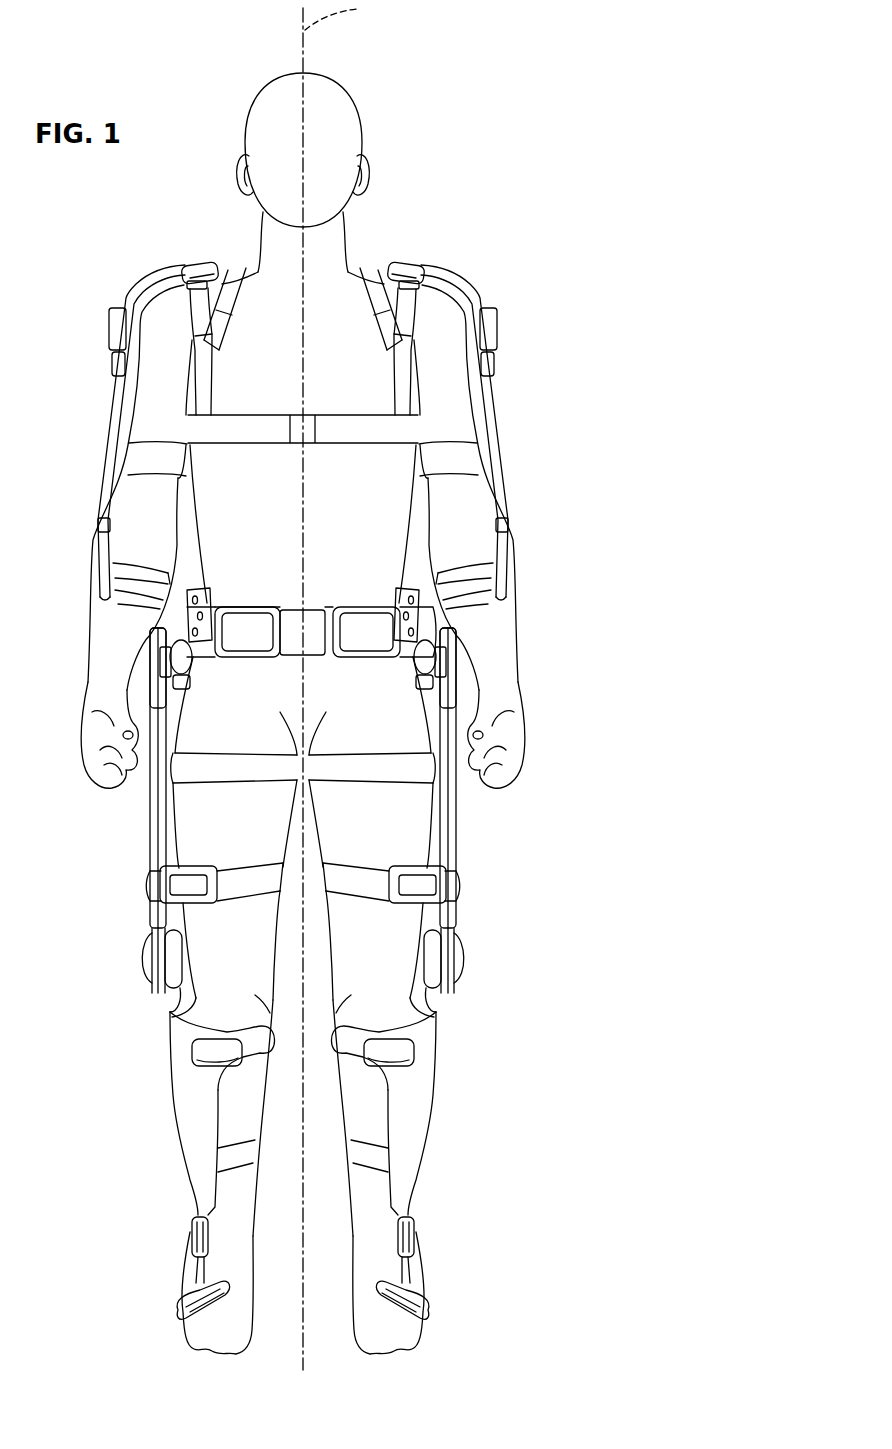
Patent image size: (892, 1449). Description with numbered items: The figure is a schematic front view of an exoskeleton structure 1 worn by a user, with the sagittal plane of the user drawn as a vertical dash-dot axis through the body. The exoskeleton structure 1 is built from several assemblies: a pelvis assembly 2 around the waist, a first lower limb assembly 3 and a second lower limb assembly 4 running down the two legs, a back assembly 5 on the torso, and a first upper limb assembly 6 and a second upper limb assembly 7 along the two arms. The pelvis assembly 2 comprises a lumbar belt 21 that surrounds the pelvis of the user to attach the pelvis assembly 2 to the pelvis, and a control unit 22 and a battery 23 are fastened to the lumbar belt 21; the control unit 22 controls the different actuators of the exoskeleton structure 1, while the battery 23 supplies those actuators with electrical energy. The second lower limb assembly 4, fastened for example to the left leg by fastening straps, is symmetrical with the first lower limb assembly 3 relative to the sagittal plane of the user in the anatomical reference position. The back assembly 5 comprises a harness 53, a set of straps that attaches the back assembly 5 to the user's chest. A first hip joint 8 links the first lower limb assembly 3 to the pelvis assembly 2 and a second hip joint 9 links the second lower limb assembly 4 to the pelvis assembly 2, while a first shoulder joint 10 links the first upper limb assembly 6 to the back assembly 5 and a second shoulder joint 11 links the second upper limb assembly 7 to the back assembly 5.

The exoskeleton structure 1 is at (342, 685).
The pelvis assembly 2 is at (321, 584).
The first lower limb assembly 3 is at (142, 913).
The second lower limb assembly 4 is at (462, 913).
The back assembly 5 is at (370, 265).
The first upper limb assembly 6 is at (105, 408).
The second upper limb assembly 7 is at (500, 408).
The first hip joint 8 is at (139, 662).
The second hip joint 9 is at (468, 662).
The first shoulder joint 10 is at (196, 258).
The second shoulder joint 11 is at (405, 261).
The lumbar belt 21 is at (253, 607).
The control unit 22 is at (242, 633).
The battery 23 is at (380, 637).
The harness 53 is at (202, 360).